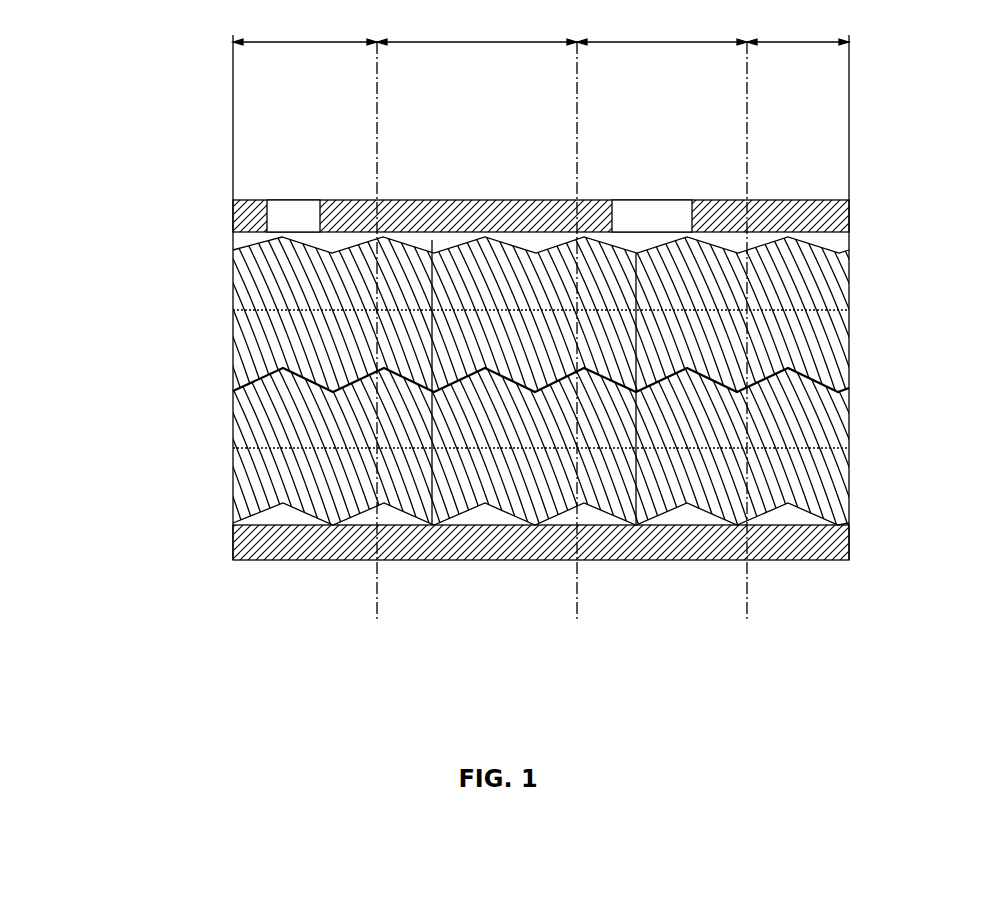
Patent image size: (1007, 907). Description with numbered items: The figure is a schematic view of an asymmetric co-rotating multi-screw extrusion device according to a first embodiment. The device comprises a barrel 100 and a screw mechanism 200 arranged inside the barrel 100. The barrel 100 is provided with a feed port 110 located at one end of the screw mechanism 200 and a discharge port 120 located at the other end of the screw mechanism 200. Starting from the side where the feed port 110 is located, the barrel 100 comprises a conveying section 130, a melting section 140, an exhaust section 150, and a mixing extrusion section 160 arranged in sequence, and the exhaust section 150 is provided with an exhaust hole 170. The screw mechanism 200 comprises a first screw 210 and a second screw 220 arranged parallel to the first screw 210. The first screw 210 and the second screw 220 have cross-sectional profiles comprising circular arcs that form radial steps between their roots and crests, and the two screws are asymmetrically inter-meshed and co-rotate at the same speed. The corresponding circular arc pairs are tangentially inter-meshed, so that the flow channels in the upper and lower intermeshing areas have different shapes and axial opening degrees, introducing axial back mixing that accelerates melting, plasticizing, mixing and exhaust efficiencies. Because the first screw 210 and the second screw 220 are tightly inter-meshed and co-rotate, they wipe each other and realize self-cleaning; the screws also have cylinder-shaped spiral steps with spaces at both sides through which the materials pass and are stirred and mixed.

The barrel 100 is at (298, 560).
The feed port 110 is at (472, 175).
The discharge port 120 is at (840, 250).
The conveying section 130 is at (305, 33).
The melting section 140 is at (477, 33).
The exhaust section 150 is at (662, 33).
The mixing extrusion section 160 is at (798, 33).
The exhaust hole 170 is at (643, 215).
The screw mechanism 200 is at (488, 381).
The first screw 210 is at (545, 314).
The second screw 220 is at (498, 446).